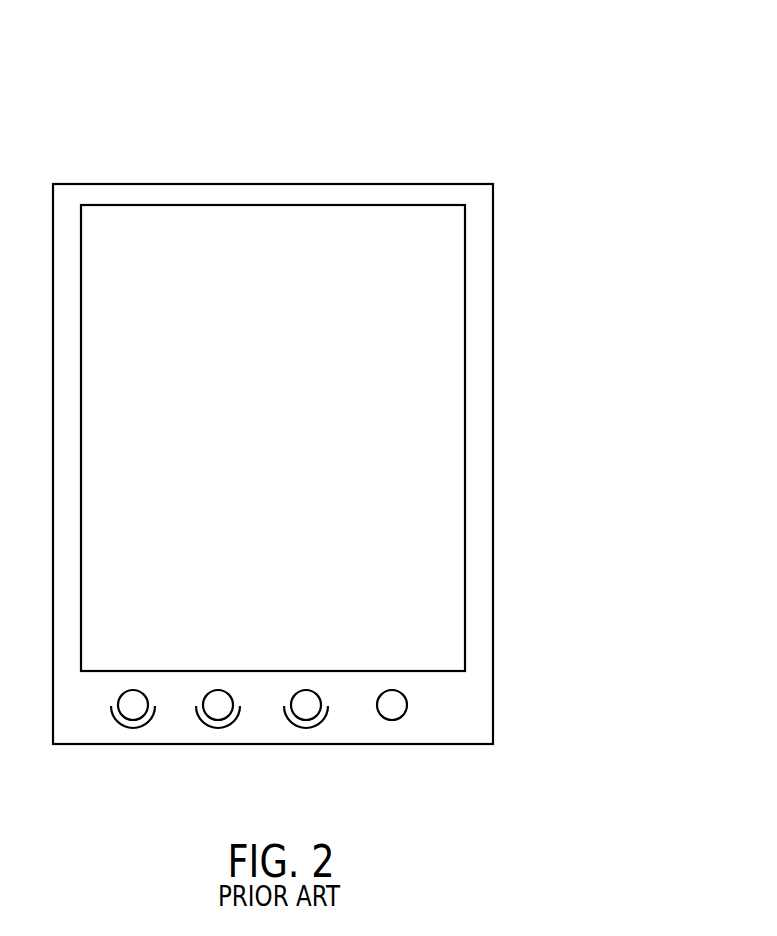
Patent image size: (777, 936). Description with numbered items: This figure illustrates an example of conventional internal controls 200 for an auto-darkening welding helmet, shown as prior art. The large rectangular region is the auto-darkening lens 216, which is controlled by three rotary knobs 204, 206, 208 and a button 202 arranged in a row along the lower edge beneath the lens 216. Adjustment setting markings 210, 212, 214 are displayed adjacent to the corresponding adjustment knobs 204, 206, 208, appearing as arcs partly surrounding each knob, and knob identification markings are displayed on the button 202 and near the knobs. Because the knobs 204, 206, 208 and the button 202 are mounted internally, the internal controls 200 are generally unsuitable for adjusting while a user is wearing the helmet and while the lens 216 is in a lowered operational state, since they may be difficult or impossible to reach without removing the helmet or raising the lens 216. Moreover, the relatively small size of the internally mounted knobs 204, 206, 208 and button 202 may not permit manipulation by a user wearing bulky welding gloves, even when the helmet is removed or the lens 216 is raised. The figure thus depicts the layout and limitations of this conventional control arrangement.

The internal controls 200 is at (564, 72).
The button 202 is at (395, 720).
The rotary knob 204 is at (308, 720).
The rotary knob 206 is at (220, 720).
The rotary knob 208 is at (135, 720).
The adjustment setting marking 210 is at (296, 723).
The adjustment setting marking 212 is at (208, 723).
The adjustment setting marking 214 is at (123, 723).
The auto-darkening lens 216 is at (432, 385).